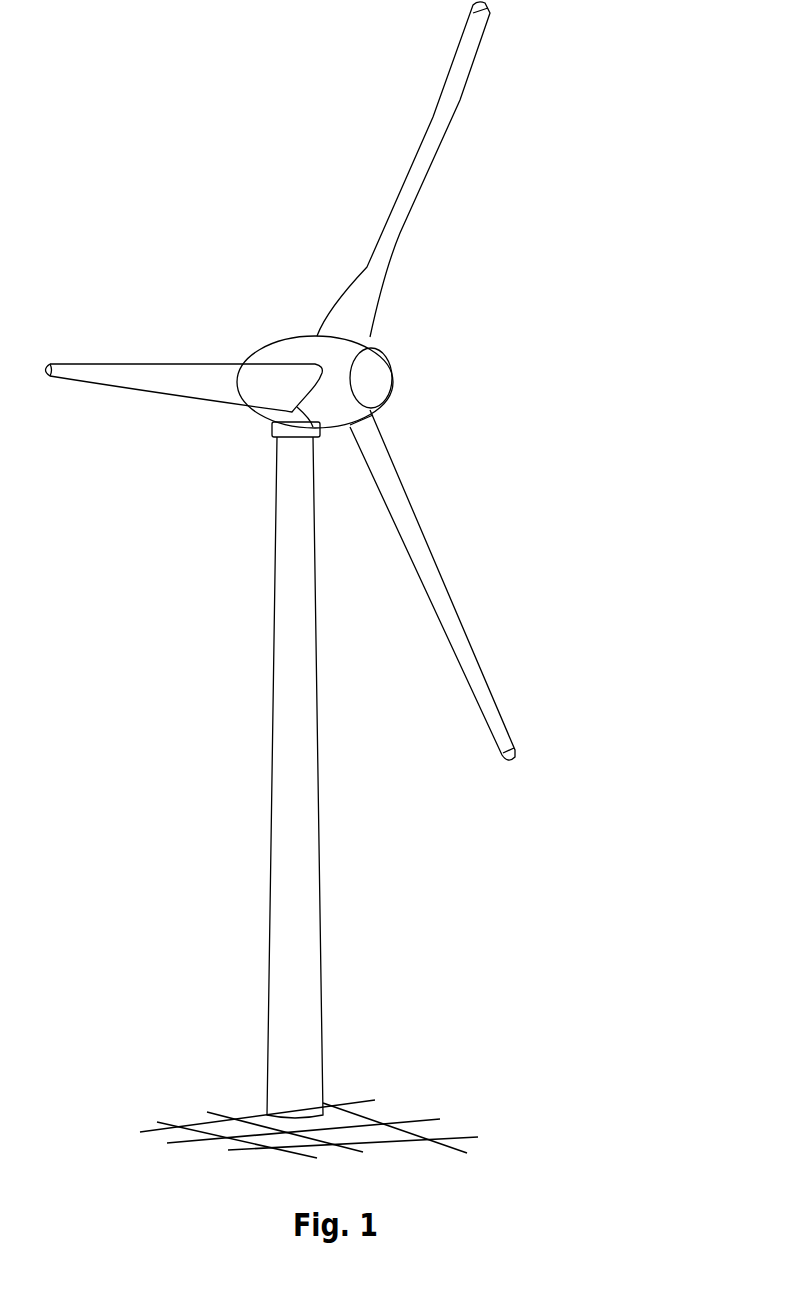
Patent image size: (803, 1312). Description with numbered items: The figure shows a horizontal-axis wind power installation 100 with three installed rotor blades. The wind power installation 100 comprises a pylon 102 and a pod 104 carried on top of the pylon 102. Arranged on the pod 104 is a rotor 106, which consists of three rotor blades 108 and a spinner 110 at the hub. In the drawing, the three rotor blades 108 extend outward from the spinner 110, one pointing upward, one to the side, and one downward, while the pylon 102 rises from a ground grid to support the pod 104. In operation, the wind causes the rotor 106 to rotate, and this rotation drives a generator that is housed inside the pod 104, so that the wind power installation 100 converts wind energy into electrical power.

The wind power installation 100 is at (361, 580).
The pylon 102 is at (302, 880).
The pod 104 is at (285, 352).
The rotor 106 is at (540, 291).
The rotor blades 108 is at (433, 117).
The spinner 110 is at (380, 383).